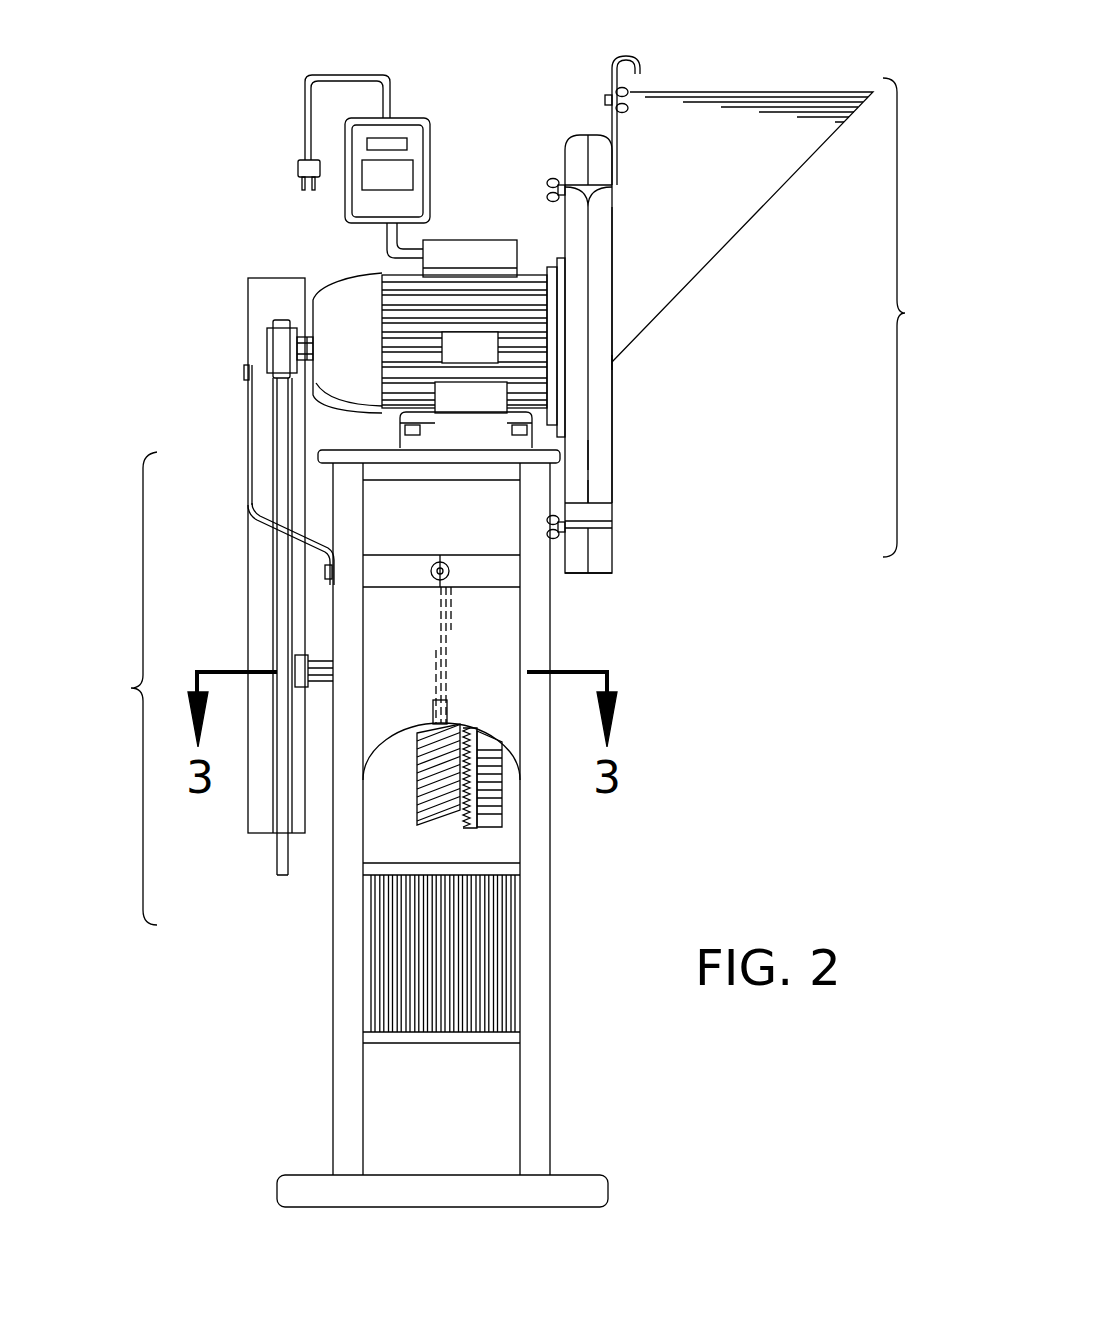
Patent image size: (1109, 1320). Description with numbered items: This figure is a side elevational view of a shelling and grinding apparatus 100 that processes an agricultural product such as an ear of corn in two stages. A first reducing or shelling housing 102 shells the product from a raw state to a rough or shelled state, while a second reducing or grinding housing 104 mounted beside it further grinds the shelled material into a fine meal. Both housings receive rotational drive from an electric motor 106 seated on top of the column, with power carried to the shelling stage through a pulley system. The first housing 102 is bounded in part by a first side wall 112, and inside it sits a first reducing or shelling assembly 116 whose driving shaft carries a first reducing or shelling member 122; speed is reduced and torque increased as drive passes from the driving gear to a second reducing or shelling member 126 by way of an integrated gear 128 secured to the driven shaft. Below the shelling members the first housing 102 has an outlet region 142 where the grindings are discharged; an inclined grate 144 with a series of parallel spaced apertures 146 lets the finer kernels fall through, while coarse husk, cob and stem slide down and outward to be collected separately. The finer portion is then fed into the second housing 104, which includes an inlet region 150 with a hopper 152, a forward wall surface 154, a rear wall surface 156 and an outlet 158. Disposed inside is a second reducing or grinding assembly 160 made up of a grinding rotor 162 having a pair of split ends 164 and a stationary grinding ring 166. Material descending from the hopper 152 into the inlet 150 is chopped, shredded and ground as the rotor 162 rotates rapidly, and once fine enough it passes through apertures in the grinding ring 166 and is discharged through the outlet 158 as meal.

The shelling and grinding apparatus 100 is at (216, 188).
The first reducing or shelling housing 102 is at (119, 688).
The second reducing or grinding housing 104 is at (720, 339).
The electric motor 106 is at (437, 283).
The first side wall 112 is at (428, 631).
The first reducing or shelling assembly 116 is at (480, 846).
The first reducing or shelling member 122 is at (440, 805).
The second reducing or shelling member 126 is at (473, 803).
The integrated gear 128 is at (498, 782).
The outlet region 142 is at (520, 995).
The inclined grate 144 is at (412, 1033).
The parallel spaced apertures 146 is at (452, 1033).
The inlet region 150 is at (648, 292).
The hopper 152 is at (710, 133).
The forward wall surface 154 is at (612, 437).
The rear wall surface 156 is at (560, 225).
The outlet 158 is at (615, 595).
The second reducing or grinding assembly 160 is at (634, 364).
The grinding rotor 162 is at (590, 455).
The split ends 164 is at (590, 493).
The stationary grinding ring 166 is at (598, 506).